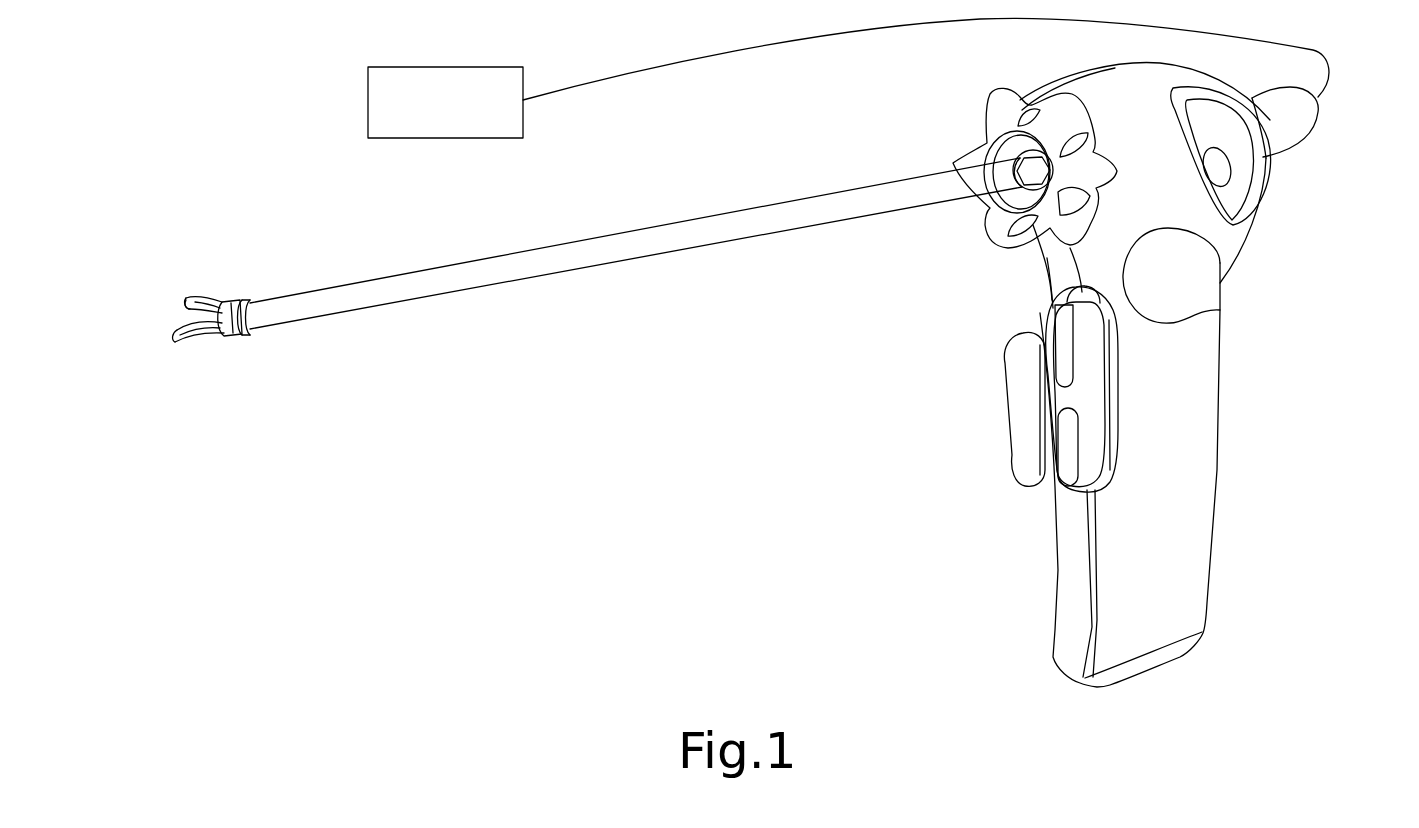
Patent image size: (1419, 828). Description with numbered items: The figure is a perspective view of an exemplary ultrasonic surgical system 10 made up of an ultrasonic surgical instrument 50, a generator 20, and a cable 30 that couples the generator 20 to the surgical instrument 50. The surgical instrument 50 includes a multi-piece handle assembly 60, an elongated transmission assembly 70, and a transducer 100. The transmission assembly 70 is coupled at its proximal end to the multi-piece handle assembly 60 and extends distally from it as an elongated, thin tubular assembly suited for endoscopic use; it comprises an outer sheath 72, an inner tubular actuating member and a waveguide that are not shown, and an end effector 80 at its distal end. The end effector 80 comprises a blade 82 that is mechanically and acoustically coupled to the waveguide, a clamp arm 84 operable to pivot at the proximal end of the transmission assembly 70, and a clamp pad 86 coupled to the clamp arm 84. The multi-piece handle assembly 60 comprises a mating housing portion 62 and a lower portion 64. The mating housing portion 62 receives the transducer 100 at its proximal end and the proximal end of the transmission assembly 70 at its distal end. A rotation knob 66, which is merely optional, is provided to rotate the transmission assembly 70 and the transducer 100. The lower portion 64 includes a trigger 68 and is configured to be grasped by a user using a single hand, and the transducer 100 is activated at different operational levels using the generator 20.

The ultrasonic surgical system 10 is at (425, 516).
The generator 20 is at (448, 66).
The cable 30 is at (734, 47).
The ultrasonic surgical instrument 50 is at (881, 433).
The multi-piece handle assembly 60 is at (1255, 396).
The mating housing portion 62 is at (1058, 87).
The lower portion 64 is at (1188, 480).
The rotation knob 66 is at (1010, 245).
The trigger 68 is at (1025, 453).
The transmission assembly 70 is at (566, 329).
The outer sheath 72 is at (430, 285).
The end effector 80 is at (178, 363).
The blade 82 is at (195, 338).
The clamp arm 84 is at (212, 297).
The clamp pad 86 is at (190, 312).
The transducer 100 is at (1298, 146).